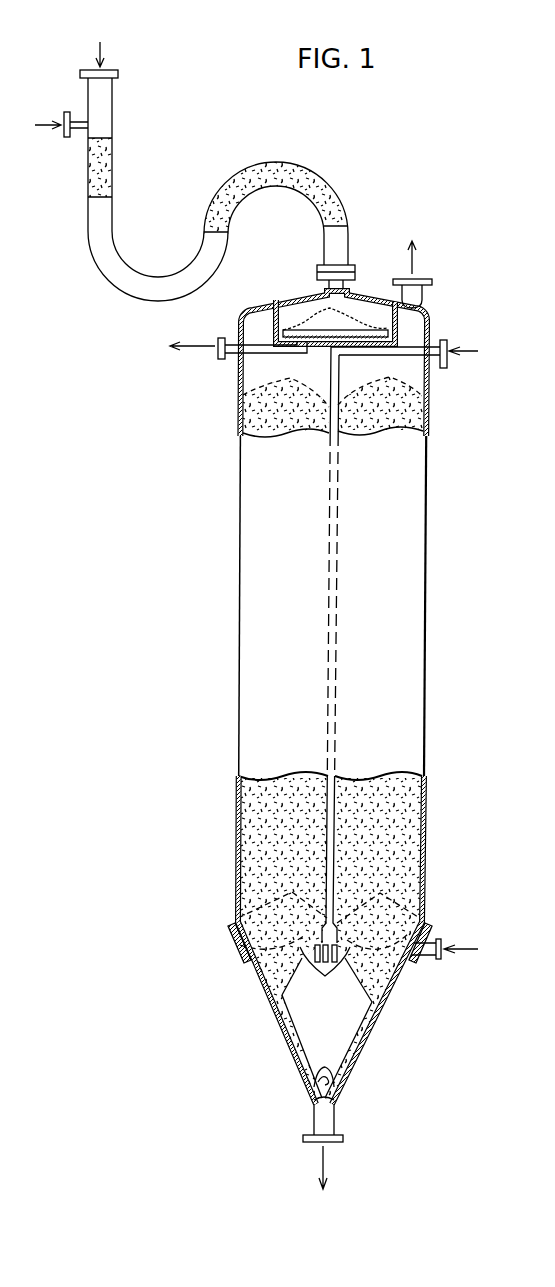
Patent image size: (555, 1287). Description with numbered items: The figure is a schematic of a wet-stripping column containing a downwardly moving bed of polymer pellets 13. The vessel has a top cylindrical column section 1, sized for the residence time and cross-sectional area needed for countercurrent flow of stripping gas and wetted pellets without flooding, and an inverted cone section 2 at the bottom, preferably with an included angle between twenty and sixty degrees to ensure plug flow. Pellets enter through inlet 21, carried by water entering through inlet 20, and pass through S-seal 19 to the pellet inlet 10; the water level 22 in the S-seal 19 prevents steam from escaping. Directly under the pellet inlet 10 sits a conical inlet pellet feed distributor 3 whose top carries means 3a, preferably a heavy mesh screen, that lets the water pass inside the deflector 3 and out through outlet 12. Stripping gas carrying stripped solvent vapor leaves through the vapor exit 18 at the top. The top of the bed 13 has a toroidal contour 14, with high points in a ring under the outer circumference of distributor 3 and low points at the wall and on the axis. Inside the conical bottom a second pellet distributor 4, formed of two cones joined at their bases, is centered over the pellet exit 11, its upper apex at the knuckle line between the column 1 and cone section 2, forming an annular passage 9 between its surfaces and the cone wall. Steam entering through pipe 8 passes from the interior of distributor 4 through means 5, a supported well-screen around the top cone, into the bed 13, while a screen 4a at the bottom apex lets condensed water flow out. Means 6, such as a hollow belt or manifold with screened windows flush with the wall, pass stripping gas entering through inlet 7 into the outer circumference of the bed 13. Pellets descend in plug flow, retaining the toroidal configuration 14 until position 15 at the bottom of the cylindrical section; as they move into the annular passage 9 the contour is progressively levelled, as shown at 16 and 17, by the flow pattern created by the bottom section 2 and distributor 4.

The top cylindrical column section 1 is at (428, 530).
The inverted cone section 2 is at (382, 1018).
The conical inlet pellet feed distributor 3 is at (355, 316).
The means for allowing liquid to pass through 3a is at (315, 315).
The second pellet distributor 4 is at (331, 1031).
The screen 4a is at (334, 1083).
The means to permit stripping gas to pass 5 is at (325, 675).
The means to pass stripping gas 6 is at (230, 930).
The inlet 7 is at (440, 942).
The pipe 8 is at (446, 342).
The annular passage 9 is at (288, 1037).
The pellet inlet 10 is at (355, 273).
The pellet exit 11 is at (333, 1145).
The outlet 12 is at (217, 357).
The bed of polymer pellets 13 is at (290, 824).
The toroidal contour 14 is at (277, 377).
The position 15 is at (277, 890).
The levelled configuration 16 is at (273, 934).
The levelled configuration 17 is at (280, 980).
The vapor exit 18 is at (430, 283).
The S-seal 19 is at (330, 182).
The inlet 20 is at (66, 138).
The inlet 21 is at (118, 76).
The water level 22 is at (108, 146).